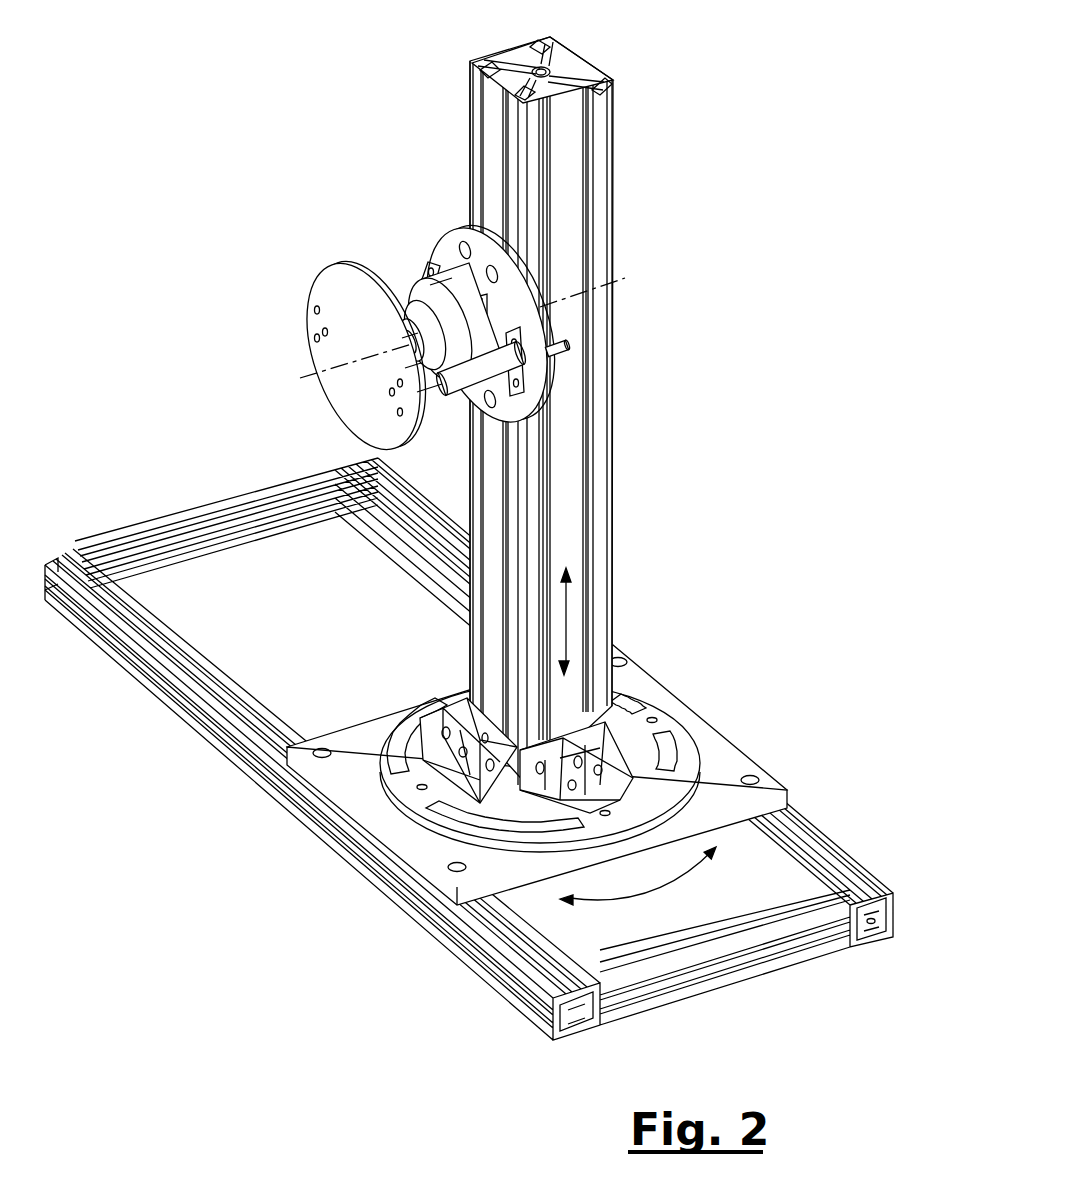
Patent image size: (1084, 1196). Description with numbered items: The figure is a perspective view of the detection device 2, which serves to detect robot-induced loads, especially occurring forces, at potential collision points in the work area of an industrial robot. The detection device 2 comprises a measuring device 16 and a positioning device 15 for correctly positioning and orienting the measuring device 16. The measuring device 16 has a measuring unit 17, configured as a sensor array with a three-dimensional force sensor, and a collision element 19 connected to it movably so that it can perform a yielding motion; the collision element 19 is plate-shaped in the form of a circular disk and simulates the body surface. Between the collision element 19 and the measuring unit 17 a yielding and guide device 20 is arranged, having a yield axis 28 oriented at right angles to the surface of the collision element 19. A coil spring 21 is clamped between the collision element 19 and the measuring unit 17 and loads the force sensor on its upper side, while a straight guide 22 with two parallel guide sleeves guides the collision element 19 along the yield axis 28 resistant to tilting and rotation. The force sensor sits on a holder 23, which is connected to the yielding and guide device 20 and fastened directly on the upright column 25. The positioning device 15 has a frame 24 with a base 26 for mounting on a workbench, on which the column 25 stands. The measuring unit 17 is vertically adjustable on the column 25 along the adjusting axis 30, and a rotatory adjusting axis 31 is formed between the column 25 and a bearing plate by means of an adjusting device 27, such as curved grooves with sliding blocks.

The detection device 2 is at (314, 130).
The positioning device 15 is at (507, 401).
The measuring device 16 is at (465, 299).
The measuring unit 17 is at (487, 316).
The collision element 19 is at (372, 412).
The yielding and guide device 20 is at (402, 293).
The spring 21 is at (437, 362).
The guide 22 is at (498, 376).
The holder 23 is at (538, 337).
The frame 24 is at (403, 877).
The column 25 is at (580, 525).
The base 26 is at (708, 747).
The adjusting device 27 is at (490, 405).
The yield axis 28 is at (345, 366).
The adjusting axis 30 is at (578, 612).
The rotatory adjusting axis 31 is at (670, 883).